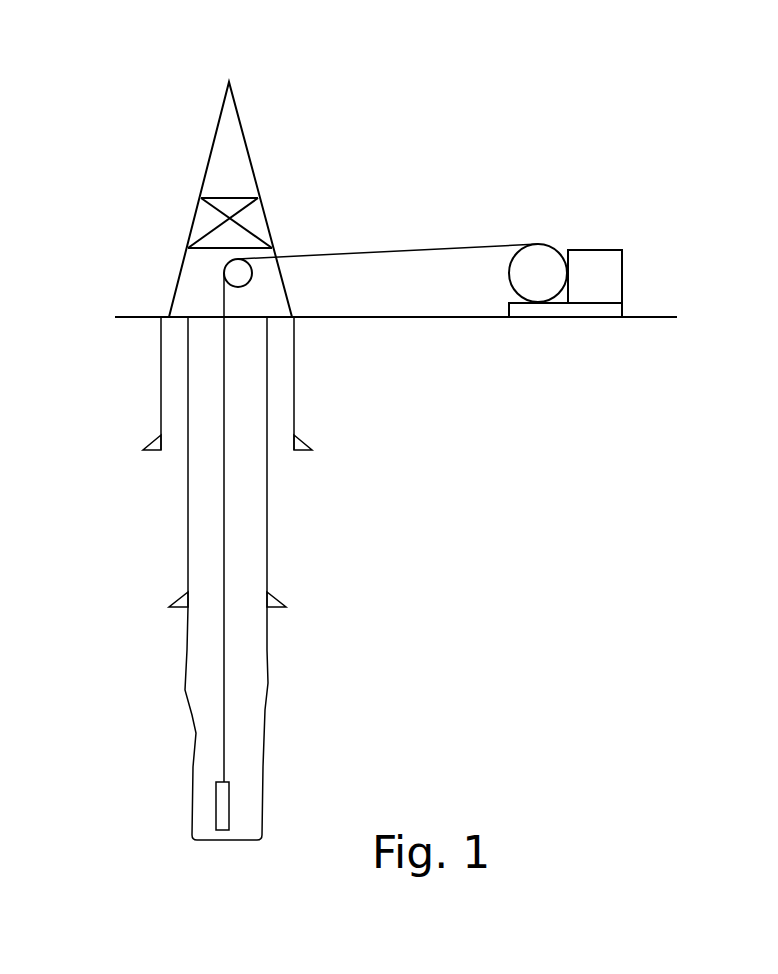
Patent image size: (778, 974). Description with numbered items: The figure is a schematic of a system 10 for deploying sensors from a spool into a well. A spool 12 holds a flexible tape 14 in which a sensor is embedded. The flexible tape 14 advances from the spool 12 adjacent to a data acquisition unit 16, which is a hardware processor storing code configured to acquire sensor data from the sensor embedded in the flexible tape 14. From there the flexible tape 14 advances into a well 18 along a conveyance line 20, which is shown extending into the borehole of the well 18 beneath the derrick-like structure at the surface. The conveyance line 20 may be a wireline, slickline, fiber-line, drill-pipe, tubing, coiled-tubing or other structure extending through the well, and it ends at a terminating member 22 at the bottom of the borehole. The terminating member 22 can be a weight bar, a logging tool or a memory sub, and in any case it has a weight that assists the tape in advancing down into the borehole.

The system 10 is at (106, 76).
The spool 12 is at (558, 234).
The flexible tape 14 is at (432, 248).
The data acquisition unit 16 is at (633, 288).
The well 18 is at (259, 140).
The conveyance line 20 is at (245, 519).
The terminating member 22 is at (230, 808).